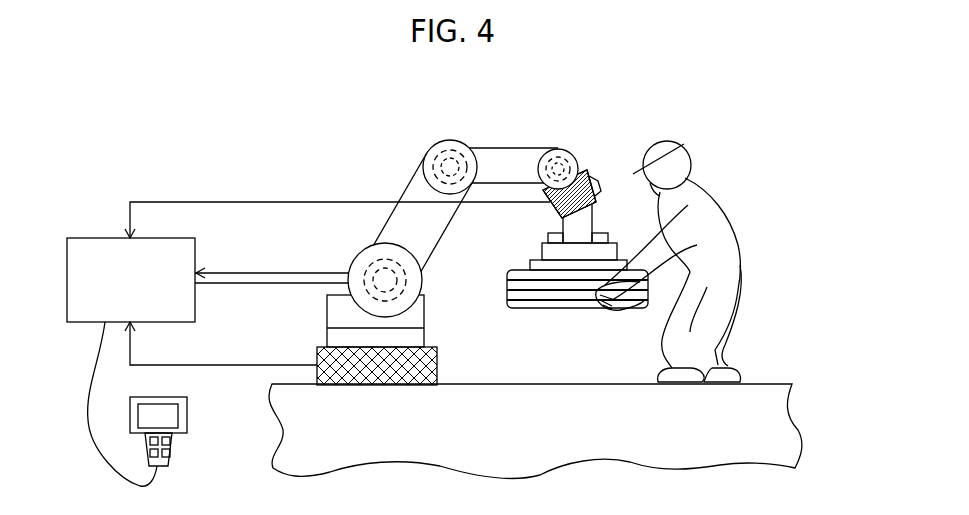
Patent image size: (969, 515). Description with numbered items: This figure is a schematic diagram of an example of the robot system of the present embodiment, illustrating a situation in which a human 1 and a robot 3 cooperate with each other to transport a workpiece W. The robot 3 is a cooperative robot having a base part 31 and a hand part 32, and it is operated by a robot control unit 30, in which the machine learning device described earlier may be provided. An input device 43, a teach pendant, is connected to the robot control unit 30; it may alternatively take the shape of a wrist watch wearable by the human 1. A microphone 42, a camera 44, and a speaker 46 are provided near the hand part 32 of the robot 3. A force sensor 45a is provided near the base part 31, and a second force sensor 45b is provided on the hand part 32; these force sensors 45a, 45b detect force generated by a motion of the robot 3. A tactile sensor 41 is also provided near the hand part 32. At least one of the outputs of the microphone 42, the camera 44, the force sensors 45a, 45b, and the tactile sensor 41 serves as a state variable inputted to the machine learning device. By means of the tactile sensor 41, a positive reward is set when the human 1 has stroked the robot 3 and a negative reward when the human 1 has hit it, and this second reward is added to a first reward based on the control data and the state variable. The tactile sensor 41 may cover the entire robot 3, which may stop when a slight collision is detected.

The human 1 is at (720, 232).
The robot 3 is at (453, 223).
The robot control unit 30 is at (105, 238).
The base part 31 is at (337, 340).
The hand part 32 is at (577, 235).
The tactile sensor 41 is at (590, 212).
The microphone 42 is at (586, 170).
The input device 43 is at (177, 437).
The camera 44 is at (600, 191).
The force sensor 45a is at (437, 364).
The force sensor 45b is at (555, 216).
The speaker 46 is at (562, 205).
The workpiece W is at (577, 299).